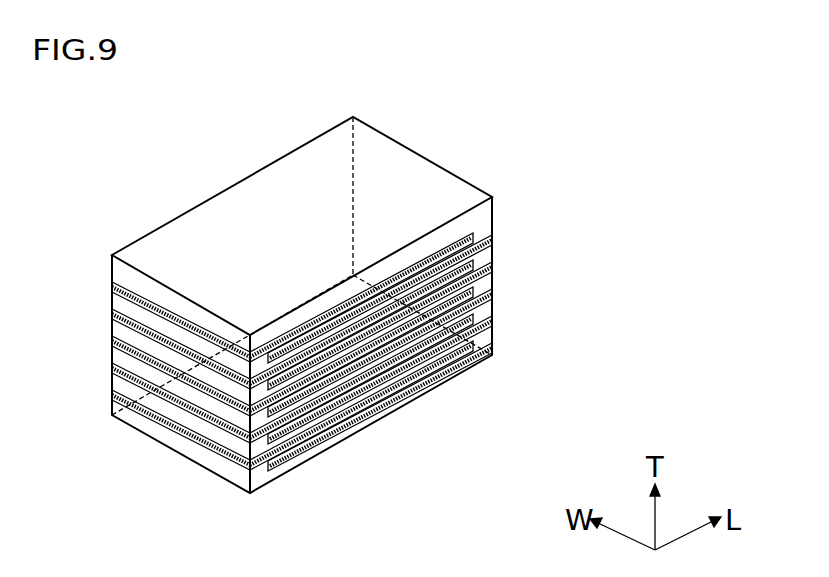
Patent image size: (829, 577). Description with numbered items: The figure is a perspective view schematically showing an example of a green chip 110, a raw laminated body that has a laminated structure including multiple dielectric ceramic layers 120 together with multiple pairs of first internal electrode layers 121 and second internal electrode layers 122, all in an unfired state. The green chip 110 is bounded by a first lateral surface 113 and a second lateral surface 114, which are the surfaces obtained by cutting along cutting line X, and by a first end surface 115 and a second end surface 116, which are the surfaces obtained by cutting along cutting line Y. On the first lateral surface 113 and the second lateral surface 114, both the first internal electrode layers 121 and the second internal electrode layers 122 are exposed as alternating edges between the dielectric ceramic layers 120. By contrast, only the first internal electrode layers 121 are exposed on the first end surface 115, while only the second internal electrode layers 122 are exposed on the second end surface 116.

The green chip 110 is at (98, 138).
The first lateral surface 113 is at (220, 225).
The second lateral surface 114 is at (413, 385).
The first end surface 115 is at (172, 410).
The second end surface 116 is at (407, 182).
The dielectric ceramic layers 120 is at (347, 393).
The first internal electrode layers 121 is at (120, 320).
The second internal electrode layers 122 is at (490, 268).